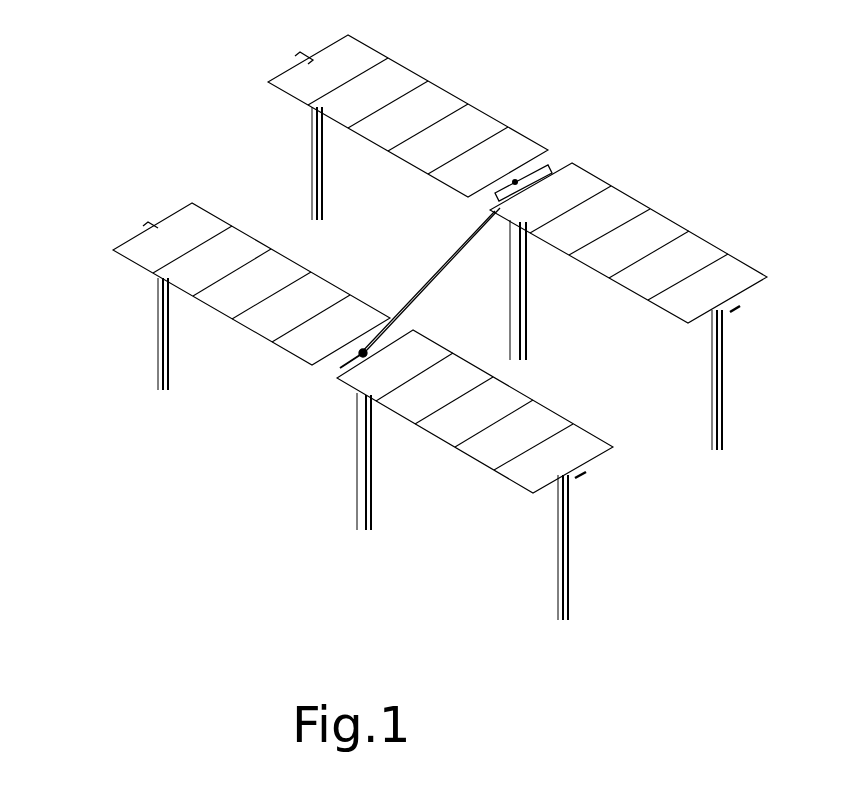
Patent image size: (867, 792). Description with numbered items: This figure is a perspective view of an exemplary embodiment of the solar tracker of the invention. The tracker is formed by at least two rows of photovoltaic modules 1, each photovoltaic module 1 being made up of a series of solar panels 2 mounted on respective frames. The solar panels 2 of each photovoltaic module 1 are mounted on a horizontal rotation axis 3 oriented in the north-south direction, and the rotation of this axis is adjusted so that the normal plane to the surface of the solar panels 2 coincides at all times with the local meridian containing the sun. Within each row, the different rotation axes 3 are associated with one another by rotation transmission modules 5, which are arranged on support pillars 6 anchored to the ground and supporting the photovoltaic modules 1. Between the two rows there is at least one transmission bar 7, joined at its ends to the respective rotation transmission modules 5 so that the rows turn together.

The photovoltaic module 1 is at (583, 155).
The solar panel 2 is at (227, 307).
The horizontal rotation axis 3 is at (732, 313).
The rotation transmission module 5 is at (353, 358).
The support pillar 6 is at (315, 185).
The transmission bar 7 is at (421, 297).